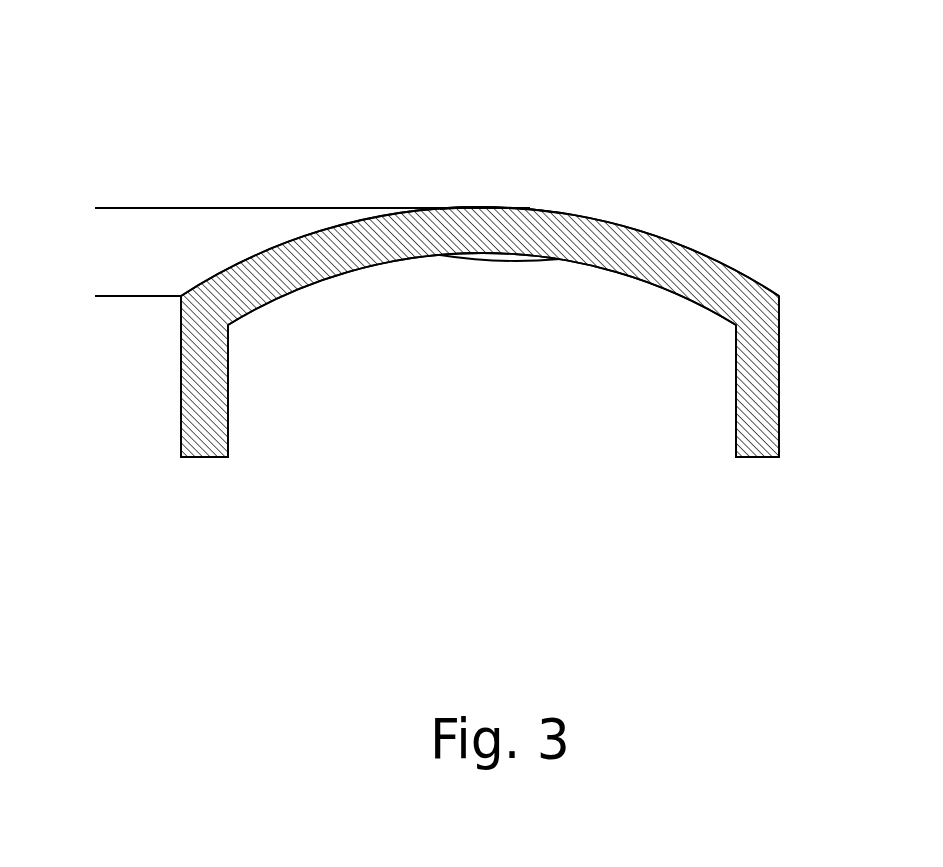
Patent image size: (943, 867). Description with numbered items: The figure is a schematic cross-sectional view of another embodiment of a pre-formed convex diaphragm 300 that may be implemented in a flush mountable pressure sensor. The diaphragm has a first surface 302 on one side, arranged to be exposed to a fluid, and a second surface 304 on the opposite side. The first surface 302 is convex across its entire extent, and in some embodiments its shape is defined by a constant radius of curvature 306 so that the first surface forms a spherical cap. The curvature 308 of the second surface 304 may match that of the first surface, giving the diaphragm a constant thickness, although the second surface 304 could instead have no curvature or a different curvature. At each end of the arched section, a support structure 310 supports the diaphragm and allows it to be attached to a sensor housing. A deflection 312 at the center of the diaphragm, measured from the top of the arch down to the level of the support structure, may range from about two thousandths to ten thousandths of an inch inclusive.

The pre-formed convex diaphragm 300 is at (417, 148).
The first surface 302 is at (672, 242).
The second surface 304 is at (320, 280).
The radius of curvature 306 is at (572, 205).
The curvature of the second surface 308 is at (559, 265).
The support structure 310 is at (207, 403).
The deflection 312 is at (116, 211).